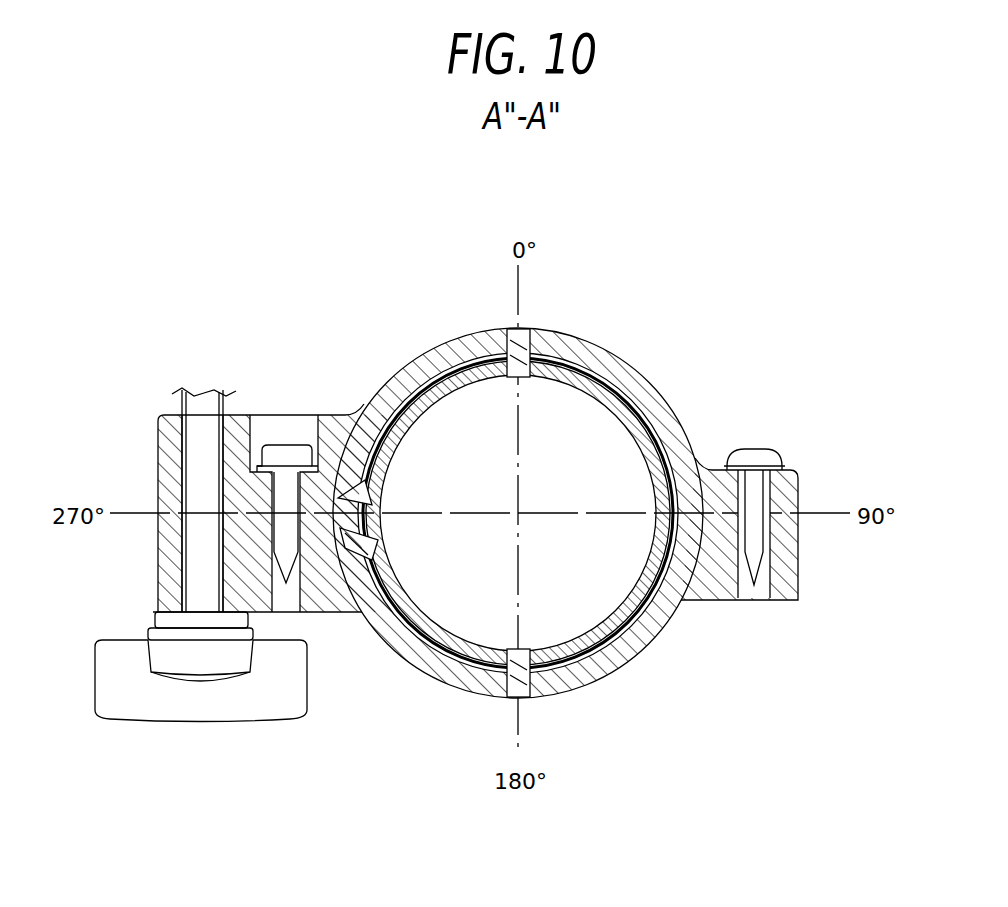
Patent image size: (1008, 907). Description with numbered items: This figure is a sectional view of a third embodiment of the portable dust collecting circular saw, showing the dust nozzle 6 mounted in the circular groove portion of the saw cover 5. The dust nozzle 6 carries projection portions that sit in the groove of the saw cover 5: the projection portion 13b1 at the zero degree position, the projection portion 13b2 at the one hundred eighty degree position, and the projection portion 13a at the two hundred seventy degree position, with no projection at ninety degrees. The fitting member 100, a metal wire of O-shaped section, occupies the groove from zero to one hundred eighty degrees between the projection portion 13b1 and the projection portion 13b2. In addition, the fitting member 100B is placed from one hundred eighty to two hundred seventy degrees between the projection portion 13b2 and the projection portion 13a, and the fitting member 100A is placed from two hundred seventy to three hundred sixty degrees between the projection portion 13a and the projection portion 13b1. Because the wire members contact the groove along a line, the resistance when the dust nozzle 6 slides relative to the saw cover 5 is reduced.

The saw cover 5 is at (652, 633).
The dust nozzle 6 is at (630, 362).
The fitting member 100 is at (717, 403).
The fitting member 100A is at (432, 350).
The fitting member 100B is at (445, 672).
The projection portion 13a is at (326, 540).
The projection portion 13b1 is at (530, 328).
The projection portion 13b2 is at (527, 700).